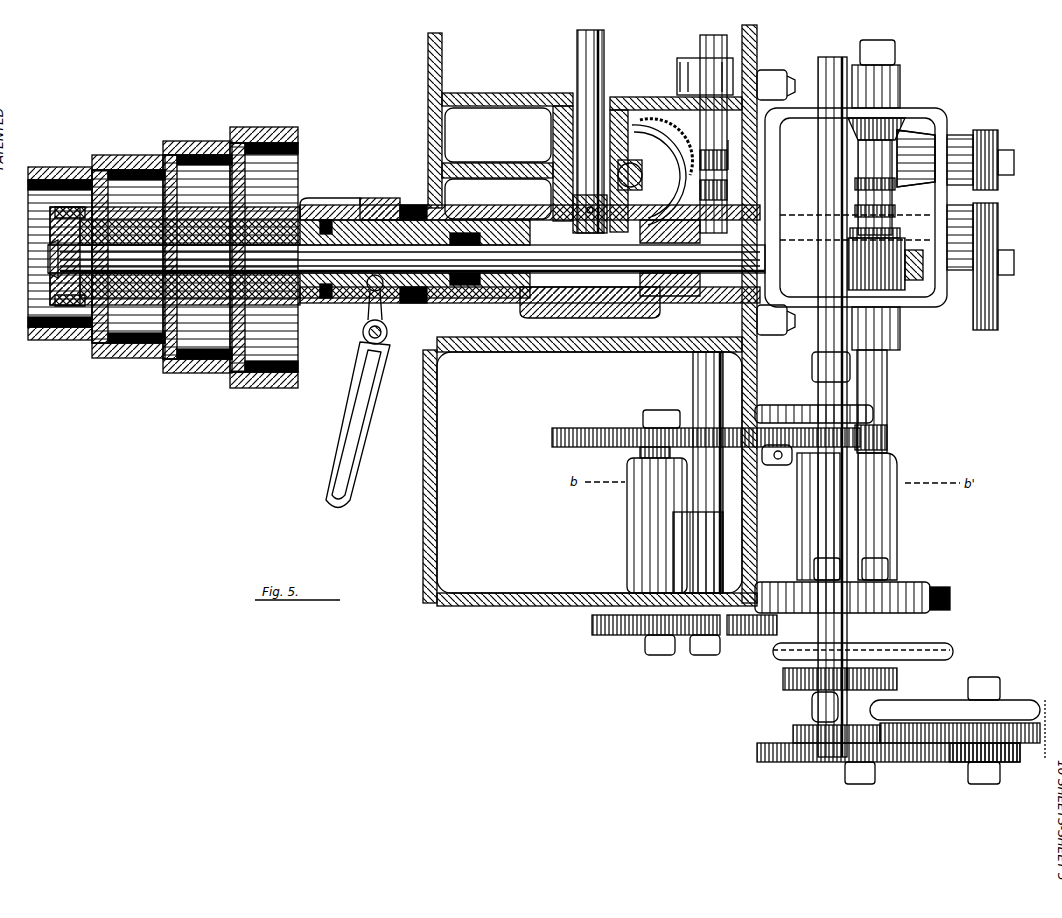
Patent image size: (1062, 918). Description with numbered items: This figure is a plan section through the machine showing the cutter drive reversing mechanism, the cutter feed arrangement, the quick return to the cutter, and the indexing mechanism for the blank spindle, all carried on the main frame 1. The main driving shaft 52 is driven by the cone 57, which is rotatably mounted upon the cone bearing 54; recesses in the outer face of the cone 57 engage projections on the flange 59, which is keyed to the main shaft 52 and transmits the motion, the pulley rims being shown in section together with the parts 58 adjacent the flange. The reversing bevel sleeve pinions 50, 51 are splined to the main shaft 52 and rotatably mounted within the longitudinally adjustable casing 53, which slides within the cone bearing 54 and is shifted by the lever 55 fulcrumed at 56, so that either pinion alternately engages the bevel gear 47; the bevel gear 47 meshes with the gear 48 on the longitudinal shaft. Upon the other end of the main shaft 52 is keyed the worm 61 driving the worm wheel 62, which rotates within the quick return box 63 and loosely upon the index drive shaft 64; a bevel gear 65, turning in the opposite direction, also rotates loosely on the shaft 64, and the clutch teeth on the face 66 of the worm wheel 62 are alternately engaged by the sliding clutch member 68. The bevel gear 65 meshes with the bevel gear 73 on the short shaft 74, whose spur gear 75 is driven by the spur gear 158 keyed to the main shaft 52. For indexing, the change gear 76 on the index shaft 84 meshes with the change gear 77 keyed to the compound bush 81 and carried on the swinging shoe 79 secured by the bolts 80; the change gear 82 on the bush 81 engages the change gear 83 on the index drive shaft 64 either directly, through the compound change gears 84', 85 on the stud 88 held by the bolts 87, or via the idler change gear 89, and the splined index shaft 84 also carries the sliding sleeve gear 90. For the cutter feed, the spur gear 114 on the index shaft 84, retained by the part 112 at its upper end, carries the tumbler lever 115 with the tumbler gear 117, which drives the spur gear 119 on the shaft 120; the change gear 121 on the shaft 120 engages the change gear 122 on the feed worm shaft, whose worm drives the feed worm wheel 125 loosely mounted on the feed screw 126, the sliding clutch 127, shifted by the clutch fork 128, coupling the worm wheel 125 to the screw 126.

The main frame 1 is at (533, 602).
The bevel gear 47 is at (577, 63).
The gear 48 is at (572, 206).
The reversing bevel sleeve pinion 50 is at (645, 286).
The reversing bevel sleeve pinion 51 is at (533, 290).
The main driving shaft 52 is at (48, 268).
The longitudinally adjustable casing 53 is at (488, 298).
The cone bearing 54 is at (368, 205).
The lever 55 is at (375, 402).
The fulcrum 56 is at (363, 332).
The cone 57 is at (282, 128).
The flange 58 is at (80, 210).
The flange 59 is at (52, 305).
The worm 61 is at (895, 242).
The worm wheel 62 is at (868, 197).
The quick return box 63 is at (872, 195).
The index drive shaft 64 is at (887, 397).
The bevel gear 65 is at (900, 122).
The clutch teeth face 66 is at (940, 116).
The sliding clutch member 68 is at (892, 228).
The bevel gear 73 is at (932, 140).
The short shaft 74 is at (1014, 160).
The spur gear 75 is at (998, 142).
The change gear 76 is at (783, 684).
The change gear 77 is at (897, 680).
The swinging shoe 79 is at (776, 658).
The bolts 80 is at (814, 563).
The compound bush 81 is at (836, 706).
The change gear 82 is at (875, 770).
The change gear 83 is at (1053, 747).
The index shaft 84 is at (821, 406).
The compound change gear 84' is at (995, 763).
The compound change gear 85 is at (793, 732).
The bolts 87 is at (888, 563).
The stud 88 is at (1028, 728).
The idler change gear 89 is at (757, 750).
The sleeve gear 90 is at (1030, 708).
The nut 112 is at (829, 382).
The spur gear 114 is at (887, 440).
The tumbler lever 115 is at (815, 412).
The tumbler gear 117 is at (779, 461).
The spur gear 119 is at (610, 420).
The shaft 120 is at (640, 455).
The change gear 121 is at (612, 635).
The change gear 122 is at (752, 636).
The feed worm wheel 125 is at (648, 118).
The feed screw 126 is at (650, 165).
The sliding clutch 127 is at (706, 134).
The clutch fork 128 is at (693, 388).
The spur gear 158 is at (990, 240).